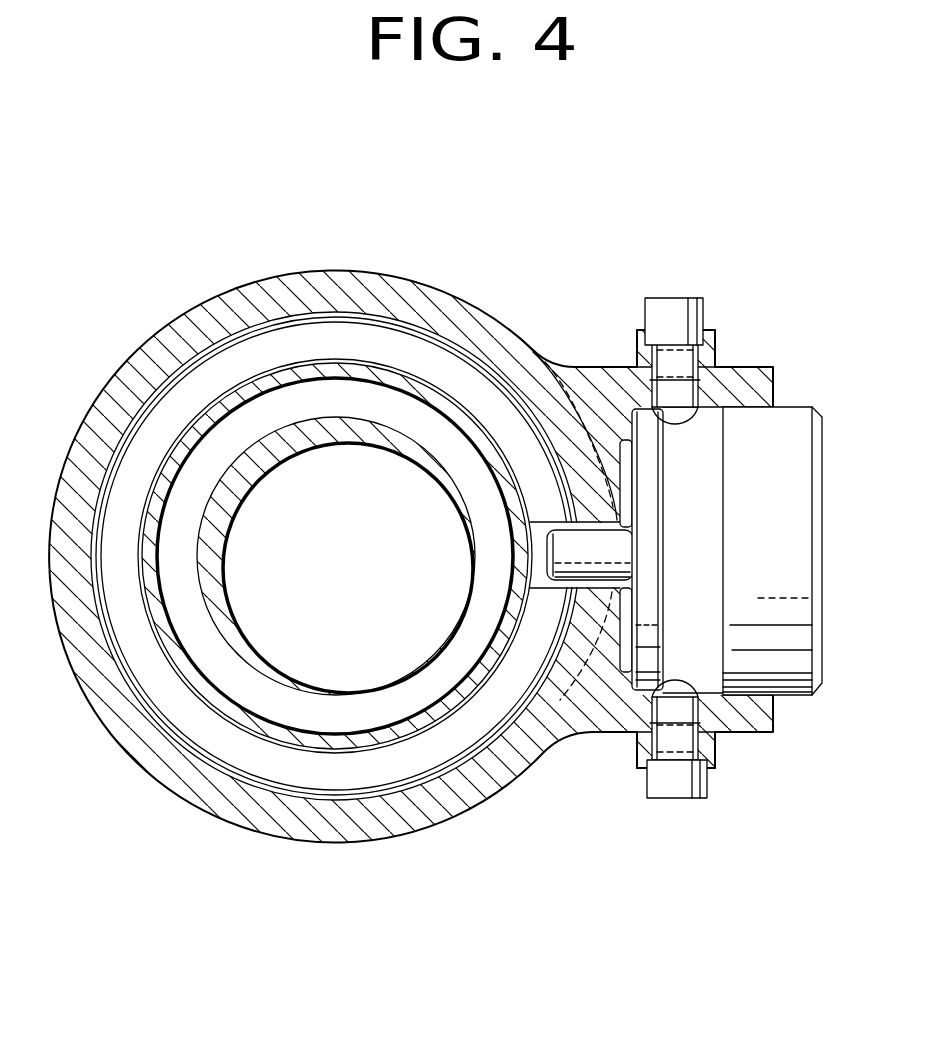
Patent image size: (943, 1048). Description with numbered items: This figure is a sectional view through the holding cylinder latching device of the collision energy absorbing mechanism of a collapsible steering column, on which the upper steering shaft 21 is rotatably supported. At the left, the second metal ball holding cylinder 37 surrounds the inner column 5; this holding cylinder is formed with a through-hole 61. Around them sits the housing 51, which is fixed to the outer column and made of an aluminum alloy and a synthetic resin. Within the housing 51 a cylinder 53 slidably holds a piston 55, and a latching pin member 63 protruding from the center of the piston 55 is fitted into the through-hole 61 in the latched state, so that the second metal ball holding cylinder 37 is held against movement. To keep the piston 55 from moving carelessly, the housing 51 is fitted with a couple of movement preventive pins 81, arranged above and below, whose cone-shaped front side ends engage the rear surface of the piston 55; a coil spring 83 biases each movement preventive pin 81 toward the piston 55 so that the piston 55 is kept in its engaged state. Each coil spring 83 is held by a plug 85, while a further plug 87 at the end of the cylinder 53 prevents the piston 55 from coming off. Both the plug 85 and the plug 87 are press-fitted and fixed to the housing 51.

The inner column 5 is at (330, 580).
The upper steering shaft 21 is at (270, 672).
The second metal ball holding cylinder 37 is at (347, 778).
The housing 51 is at (128, 346).
The cylinder 53 is at (703, 622).
The piston 55 is at (670, 522).
The through-hole 61 is at (543, 590).
The latching pin member 63 is at (618, 592).
The movement preventive pin 81 is at (702, 412).
The coil spring 83 is at (700, 360).
The plug 85 is at (662, 305).
The plug 87 is at (797, 535).